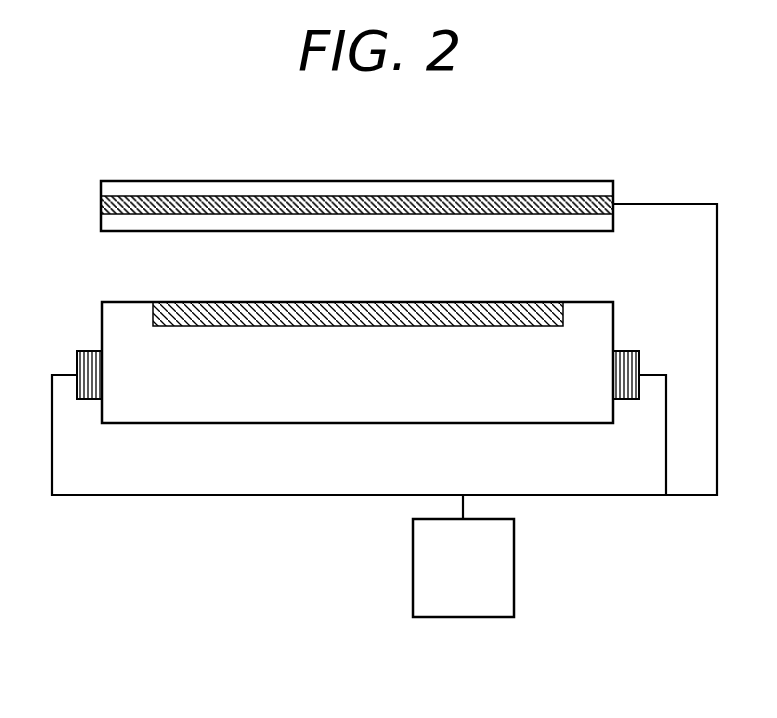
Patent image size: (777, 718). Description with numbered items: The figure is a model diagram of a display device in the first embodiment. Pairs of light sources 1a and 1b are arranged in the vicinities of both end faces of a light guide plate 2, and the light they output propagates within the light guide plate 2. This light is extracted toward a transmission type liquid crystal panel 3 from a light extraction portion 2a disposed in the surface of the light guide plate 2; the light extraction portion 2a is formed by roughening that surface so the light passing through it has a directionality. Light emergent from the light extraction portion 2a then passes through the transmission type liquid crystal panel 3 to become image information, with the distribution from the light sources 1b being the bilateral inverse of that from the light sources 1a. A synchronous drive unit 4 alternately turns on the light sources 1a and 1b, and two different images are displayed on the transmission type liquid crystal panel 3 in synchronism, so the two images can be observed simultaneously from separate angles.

The transmission type liquid crystal panel 3 is at (517, 187).
The light guide plate 2 is at (165, 403).
The light extraction portion 2a is at (352, 315).
The light sources 1a is at (85, 366).
The light sources 1b is at (630, 365).
The synchronous drive unit 4 is at (432, 620).